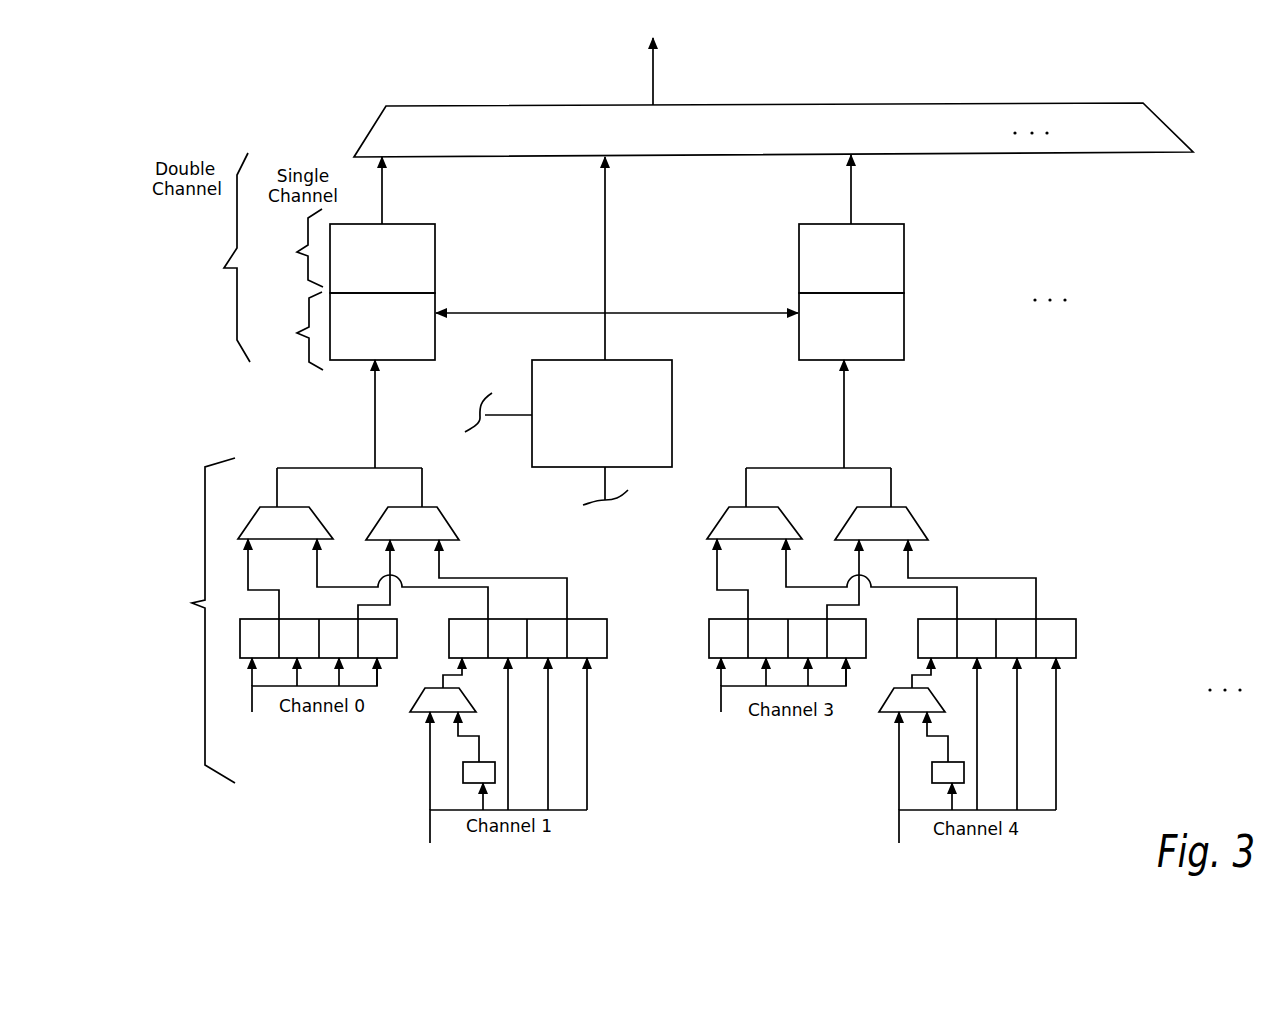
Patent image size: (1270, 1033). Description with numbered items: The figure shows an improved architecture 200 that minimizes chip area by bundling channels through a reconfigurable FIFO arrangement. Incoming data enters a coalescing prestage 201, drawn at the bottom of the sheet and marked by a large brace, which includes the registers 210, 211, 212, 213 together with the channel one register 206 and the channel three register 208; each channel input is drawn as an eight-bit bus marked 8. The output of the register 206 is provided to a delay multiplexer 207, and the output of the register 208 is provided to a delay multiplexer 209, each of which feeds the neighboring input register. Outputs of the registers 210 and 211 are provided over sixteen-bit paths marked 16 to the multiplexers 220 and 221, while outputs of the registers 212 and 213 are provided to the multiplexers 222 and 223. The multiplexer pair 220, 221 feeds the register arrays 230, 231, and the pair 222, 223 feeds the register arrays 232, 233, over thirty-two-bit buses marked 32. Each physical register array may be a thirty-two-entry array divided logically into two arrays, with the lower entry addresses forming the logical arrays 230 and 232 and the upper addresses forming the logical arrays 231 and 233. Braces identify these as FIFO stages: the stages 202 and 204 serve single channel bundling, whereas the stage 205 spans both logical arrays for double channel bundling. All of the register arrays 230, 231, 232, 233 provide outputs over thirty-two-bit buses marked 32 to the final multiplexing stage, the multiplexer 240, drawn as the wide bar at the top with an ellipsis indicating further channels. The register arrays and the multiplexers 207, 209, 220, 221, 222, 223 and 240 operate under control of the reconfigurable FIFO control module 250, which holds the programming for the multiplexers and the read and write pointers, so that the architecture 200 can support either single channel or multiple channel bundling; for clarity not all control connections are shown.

The architecture 200 is at (284, 834).
The coalescing prestage 201 is at (190, 620).
The FIFO stage 202 is at (288, 331).
The FIFO stage 204 is at (288, 248).
The FIFO stage 205 is at (222, 265).
The register 206 is at (468, 773).
The delay multiplexer 207 is at (417, 702).
The register 208 is at (937, 777).
The delay multiplexer 209 is at (893, 705).
The register 210 is at (398, 637).
The register 211 is at (607, 640).
The register 212 is at (866, 640).
The register 213 is at (1072, 642).
The multiplexer 220 is at (267, 532).
The multiplexer 221 is at (395, 532).
The multiplexer 222 is at (736, 532).
The multiplexer 223 is at (864, 532).
The register array 230 is at (366, 331).
The register array 231 is at (366, 270).
The register array 232 is at (835, 331).
The register array 233 is at (835, 270).
The multiplexer 240 is at (844, 139).
The reconfigurable FIFO control module 250 is at (657, 400).
The 32-bit bus 32 is at (645, 90).
The 16-bit bus 16 is at (410, 502).
The 8-bit bus 8 is at (258, 692).